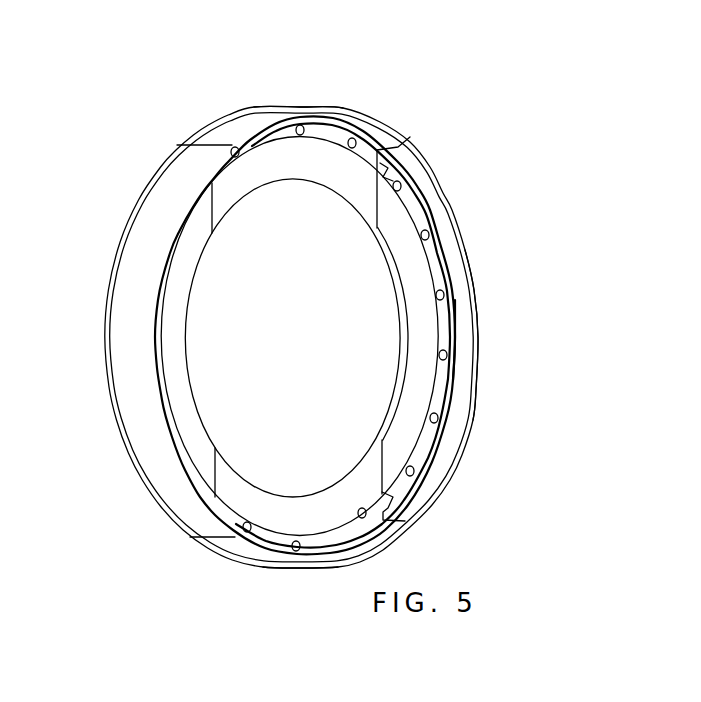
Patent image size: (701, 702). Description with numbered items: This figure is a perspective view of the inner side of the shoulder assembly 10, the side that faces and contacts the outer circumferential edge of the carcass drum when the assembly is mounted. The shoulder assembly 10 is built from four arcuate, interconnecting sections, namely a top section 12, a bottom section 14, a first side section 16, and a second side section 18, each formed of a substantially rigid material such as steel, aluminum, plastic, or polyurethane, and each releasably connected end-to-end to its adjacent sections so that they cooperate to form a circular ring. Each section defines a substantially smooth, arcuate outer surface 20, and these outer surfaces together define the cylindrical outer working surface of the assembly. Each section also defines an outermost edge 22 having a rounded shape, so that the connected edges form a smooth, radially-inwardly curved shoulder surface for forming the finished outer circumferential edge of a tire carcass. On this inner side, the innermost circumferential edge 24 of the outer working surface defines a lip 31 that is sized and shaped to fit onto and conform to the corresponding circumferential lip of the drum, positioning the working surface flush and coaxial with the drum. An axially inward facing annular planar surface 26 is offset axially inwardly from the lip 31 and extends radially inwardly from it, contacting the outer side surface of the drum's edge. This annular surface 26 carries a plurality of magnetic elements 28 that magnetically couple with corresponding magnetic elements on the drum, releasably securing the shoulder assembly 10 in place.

The shoulder assembly 10 is at (100, 112).
The top section 12 is at (256, 107).
The bottom section 14 is at (222, 568).
The first side section 16 is at (474, 268).
The second side section 18 is at (105, 320).
The outer surface 20 is at (181, 182).
The outermost edge 22 is at (118, 234).
The innermost circumferential edge 24 is at (438, 173).
The annular planar surface 26 is at (446, 323).
The magnetic elements 28 is at (398, 181).
The lip 31 is at (457, 223).